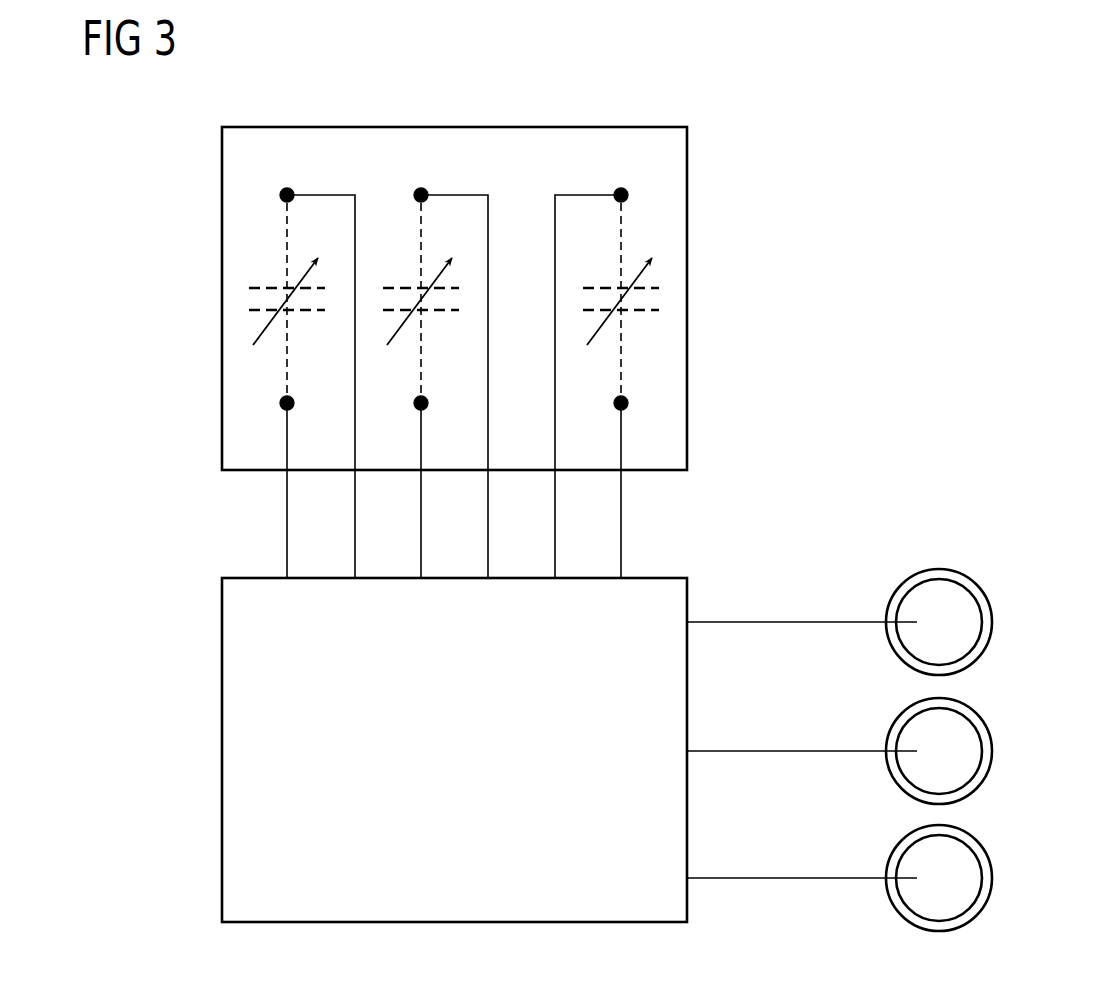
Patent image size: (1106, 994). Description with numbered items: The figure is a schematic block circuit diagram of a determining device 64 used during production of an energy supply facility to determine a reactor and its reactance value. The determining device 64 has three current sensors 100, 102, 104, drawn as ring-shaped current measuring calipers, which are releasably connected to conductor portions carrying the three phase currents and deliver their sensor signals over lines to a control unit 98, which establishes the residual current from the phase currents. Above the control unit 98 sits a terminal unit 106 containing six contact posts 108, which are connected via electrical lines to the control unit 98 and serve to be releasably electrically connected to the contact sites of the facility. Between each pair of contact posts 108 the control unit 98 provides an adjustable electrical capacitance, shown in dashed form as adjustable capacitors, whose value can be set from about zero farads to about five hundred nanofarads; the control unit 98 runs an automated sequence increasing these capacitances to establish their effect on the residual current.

The determining device 64 is at (729, 100).
The control unit 98 is at (468, 768).
The current sensor 100 is at (994, 619).
The current sensor 102 is at (994, 748).
The current sensor 104 is at (994, 875).
The terminal unit 106 is at (687, 248).
The contact post 108 is at (287, 189).